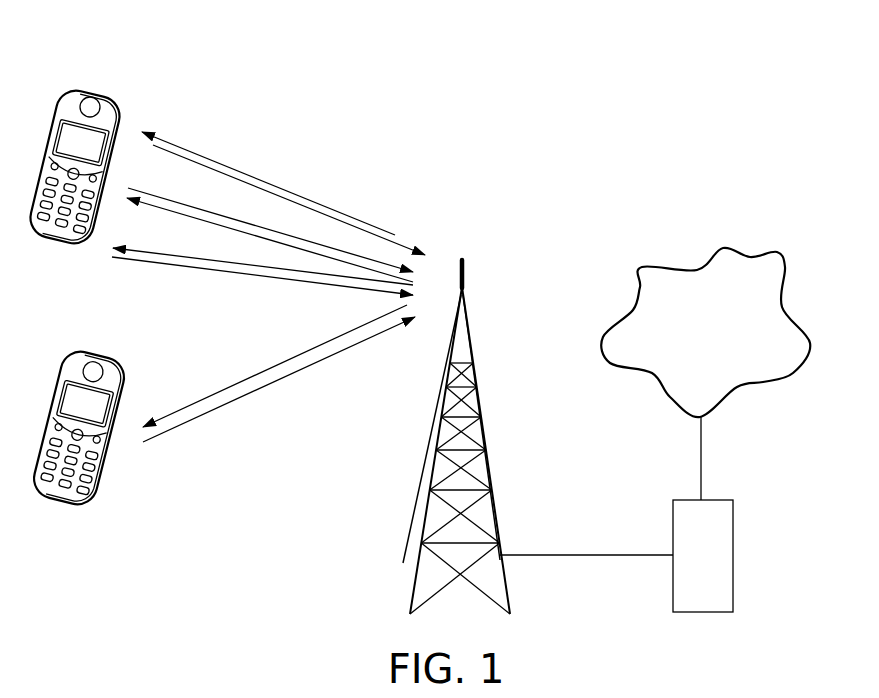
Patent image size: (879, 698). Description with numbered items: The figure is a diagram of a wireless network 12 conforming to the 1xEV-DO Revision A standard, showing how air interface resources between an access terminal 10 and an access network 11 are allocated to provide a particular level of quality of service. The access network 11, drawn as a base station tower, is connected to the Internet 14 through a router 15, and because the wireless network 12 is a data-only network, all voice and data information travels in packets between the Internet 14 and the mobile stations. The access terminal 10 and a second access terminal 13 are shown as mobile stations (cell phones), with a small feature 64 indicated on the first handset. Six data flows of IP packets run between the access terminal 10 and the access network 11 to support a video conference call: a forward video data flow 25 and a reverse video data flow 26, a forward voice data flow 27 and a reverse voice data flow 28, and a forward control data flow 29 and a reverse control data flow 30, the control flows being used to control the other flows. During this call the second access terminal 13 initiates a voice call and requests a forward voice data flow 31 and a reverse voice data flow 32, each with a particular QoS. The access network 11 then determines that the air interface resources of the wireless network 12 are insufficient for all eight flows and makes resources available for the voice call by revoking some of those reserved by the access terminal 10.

The access terminal 10 is at (84, 129).
The access network 11 is at (412, 590).
The wireless network 12 is at (511, 58).
The second access terminal 13 is at (64, 510).
The Internet 14 is at (696, 363).
The router 15 is at (733, 601).
The forward video data flow 25 is at (263, 181).
The reverse video data flow 26 is at (400, 245).
The forward voice data flow 27 is at (186, 204).
The reverse voice data flow 28 is at (187, 216).
The forward control data flow 29 is at (152, 252).
The reverse control data flow 30 is at (142, 261).
The forward voice data flow 31 is at (207, 397).
The reverse voice data flow 32 is at (257, 390).
The speaker 64 is at (96, 114).